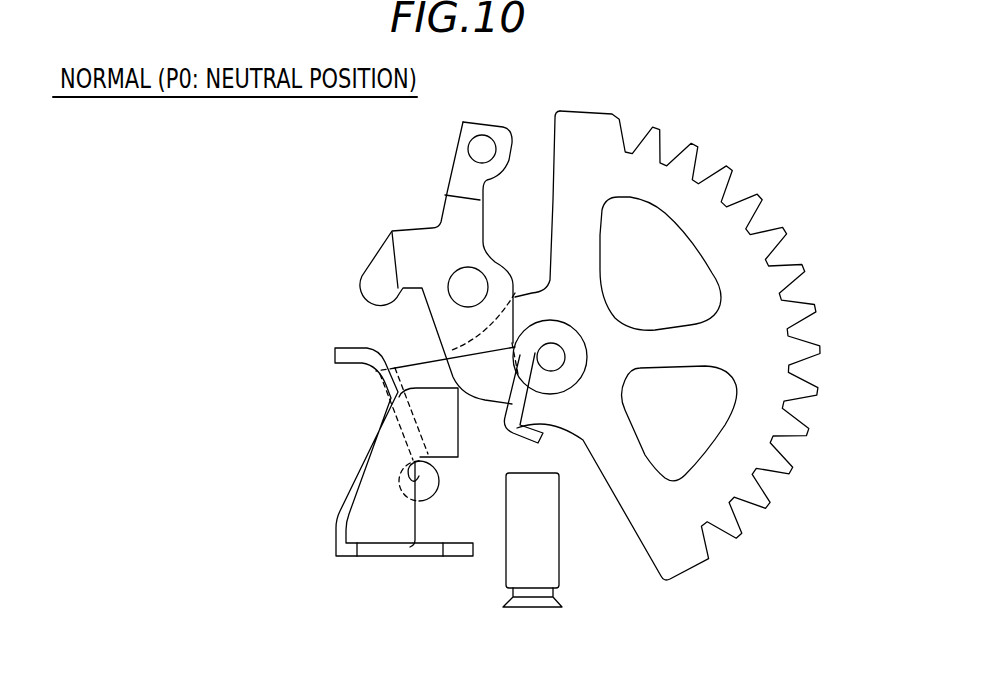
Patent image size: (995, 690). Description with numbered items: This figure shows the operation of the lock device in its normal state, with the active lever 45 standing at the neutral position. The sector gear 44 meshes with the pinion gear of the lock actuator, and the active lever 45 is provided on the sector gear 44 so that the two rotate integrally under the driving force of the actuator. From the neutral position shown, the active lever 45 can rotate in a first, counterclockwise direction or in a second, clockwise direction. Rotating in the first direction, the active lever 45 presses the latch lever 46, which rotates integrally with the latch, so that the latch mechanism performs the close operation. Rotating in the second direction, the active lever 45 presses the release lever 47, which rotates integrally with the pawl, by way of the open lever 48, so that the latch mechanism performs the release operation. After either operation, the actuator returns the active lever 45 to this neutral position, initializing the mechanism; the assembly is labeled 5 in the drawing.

The parking lock mechanism (shift device) 5 is at (170, 572).
The sector gear 44 is at (767, 200).
The active lever 45 is at (388, 396).
The latch lever 46 is at (560, 542).
The release lever 47 is at (375, 437).
The open lever 48 is at (362, 273).